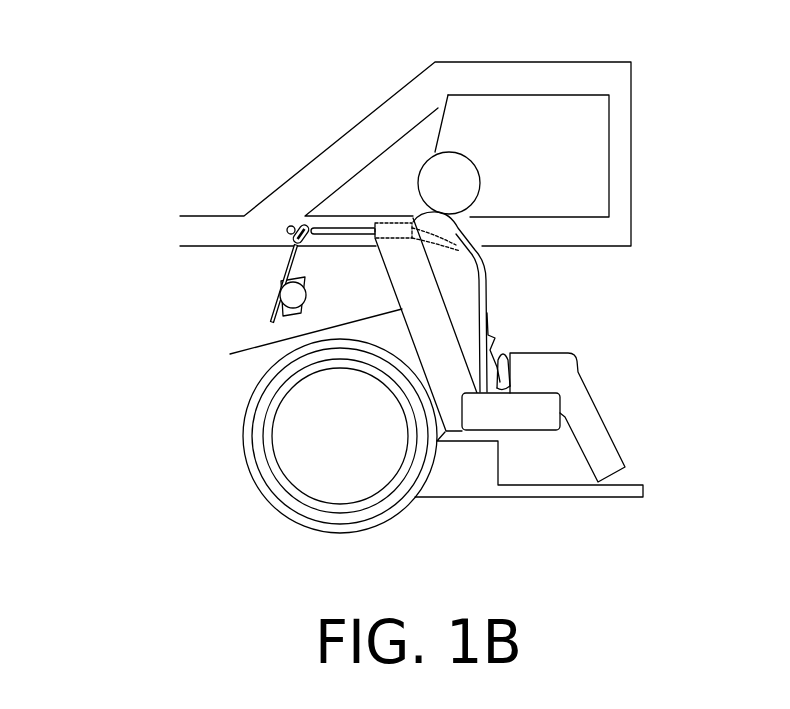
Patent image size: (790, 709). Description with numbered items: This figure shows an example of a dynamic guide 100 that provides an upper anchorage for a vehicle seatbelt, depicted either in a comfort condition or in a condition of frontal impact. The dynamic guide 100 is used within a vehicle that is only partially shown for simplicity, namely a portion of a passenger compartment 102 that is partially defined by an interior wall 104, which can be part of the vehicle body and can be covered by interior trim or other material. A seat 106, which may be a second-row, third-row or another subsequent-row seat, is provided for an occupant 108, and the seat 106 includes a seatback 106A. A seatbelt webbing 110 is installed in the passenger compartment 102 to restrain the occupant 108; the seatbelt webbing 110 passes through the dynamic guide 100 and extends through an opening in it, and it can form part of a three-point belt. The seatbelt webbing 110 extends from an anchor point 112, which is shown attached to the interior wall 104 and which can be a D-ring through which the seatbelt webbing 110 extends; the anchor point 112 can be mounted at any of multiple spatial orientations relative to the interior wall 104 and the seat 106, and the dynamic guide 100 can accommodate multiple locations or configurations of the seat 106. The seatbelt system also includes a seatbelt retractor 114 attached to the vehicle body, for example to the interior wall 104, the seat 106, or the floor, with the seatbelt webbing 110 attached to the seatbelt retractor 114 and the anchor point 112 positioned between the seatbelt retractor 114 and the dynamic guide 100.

The dynamic guide 100 is at (403, 225).
The passenger compartment 102 is at (573, 284).
The interior wall 104 is at (235, 237).
The seat 106 is at (522, 437).
The seatback 106A is at (230, 354).
The occupant 108 is at (543, 353).
The seatbelt webbing 110 is at (351, 228).
The anchor point 112 is at (294, 226).
The seatbelt retractor 114 is at (277, 302).